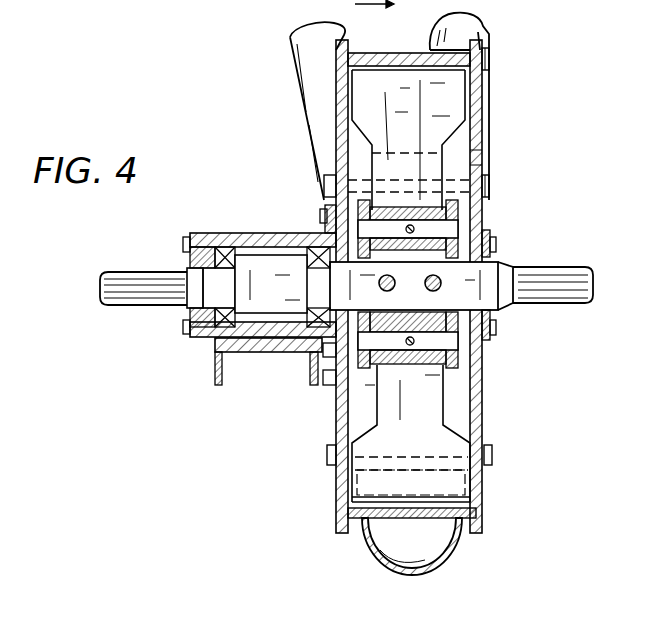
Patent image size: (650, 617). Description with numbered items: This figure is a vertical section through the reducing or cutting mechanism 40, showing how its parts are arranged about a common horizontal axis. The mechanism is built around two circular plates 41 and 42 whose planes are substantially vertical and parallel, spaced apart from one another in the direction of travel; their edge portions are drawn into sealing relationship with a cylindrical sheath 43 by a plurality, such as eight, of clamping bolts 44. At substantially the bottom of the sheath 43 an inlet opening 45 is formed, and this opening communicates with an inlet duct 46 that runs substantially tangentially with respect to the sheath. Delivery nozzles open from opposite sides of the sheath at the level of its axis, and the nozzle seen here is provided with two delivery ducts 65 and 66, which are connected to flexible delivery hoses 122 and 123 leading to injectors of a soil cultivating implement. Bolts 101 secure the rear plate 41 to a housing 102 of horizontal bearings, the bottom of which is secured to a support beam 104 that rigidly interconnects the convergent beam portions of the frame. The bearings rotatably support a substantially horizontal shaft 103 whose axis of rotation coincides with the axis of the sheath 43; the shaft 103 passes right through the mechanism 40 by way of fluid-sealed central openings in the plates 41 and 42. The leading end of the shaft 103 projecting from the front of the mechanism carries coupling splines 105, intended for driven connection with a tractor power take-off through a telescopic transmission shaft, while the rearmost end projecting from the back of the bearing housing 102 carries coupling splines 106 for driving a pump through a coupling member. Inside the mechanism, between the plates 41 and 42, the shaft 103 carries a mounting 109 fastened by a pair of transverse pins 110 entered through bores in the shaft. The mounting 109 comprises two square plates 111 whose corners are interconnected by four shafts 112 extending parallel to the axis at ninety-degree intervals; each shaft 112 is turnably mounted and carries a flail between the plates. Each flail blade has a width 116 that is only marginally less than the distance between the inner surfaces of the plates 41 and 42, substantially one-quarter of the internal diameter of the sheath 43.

The reducing or cutting mechanism 40 is at (487, 126).
The rear circular plate 41 is at (338, 490).
The front circular plate 42 is at (483, 494).
The cylindrical sheath 43 is at (402, 60).
The clamping bolts 44 is at (488, 58).
The inlet opening 45 is at (458, 480).
The inlet duct 46 is at (366, 548).
The delivery duct 65 is at (474, 163).
The delivery duct 66 is at (397, 203).
The bolts 101 is at (323, 216).
The bearing housing 102 is at (256, 220).
The shaft 103 is at (267, 338).
The support beam 104 is at (215, 372).
The coupling splines 105 is at (550, 305).
The coupling splines 106 is at (116, 307).
The mounting 109 is at (488, 304).
The transverse pins 110 is at (438, 290).
The square plates 111 is at (373, 381).
The shafts 112 is at (460, 228).
The width 116 is at (391, 452).
The hose 122 is at (472, 22).
The hose 123 is at (294, 56).